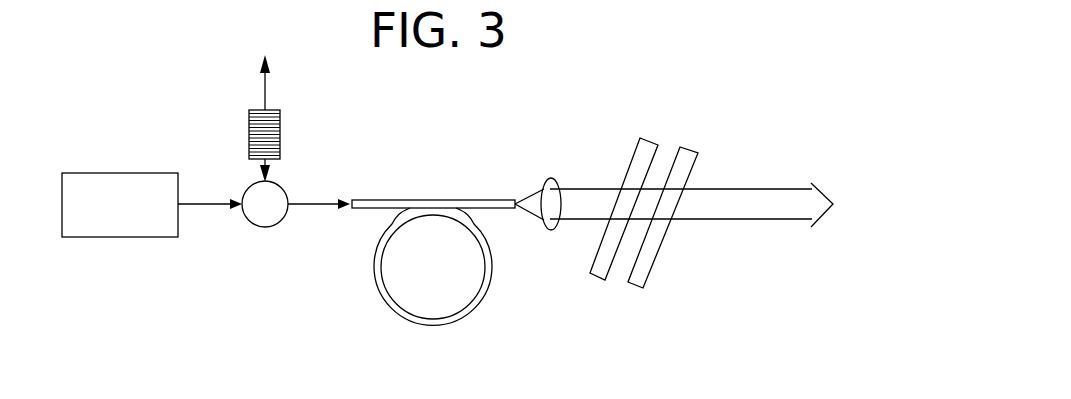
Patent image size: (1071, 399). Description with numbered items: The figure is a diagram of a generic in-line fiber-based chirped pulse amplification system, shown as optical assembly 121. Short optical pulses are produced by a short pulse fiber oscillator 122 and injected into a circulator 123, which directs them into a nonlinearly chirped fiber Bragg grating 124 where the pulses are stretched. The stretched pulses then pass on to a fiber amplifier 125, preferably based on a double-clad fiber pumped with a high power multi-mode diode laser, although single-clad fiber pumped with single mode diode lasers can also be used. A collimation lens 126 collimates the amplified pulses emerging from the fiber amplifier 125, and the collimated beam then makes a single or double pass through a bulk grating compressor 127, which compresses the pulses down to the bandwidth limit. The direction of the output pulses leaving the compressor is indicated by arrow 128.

The optical assembly 121 is at (645, 115).
The short pulse fiber oscillator 122 is at (137, 172).
The circulator 123 is at (290, 189).
The nonlinearly chirped fiber Bragg grating 124 is at (265, 98).
The fiber amplifier 125 is at (374, 263).
The collimation lens 126 is at (543, 184).
The bulk grating compressor 127 is at (633, 288).
The arrow 128 is at (755, 188).